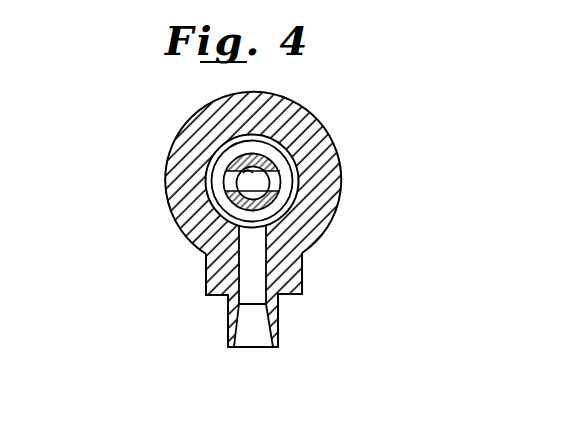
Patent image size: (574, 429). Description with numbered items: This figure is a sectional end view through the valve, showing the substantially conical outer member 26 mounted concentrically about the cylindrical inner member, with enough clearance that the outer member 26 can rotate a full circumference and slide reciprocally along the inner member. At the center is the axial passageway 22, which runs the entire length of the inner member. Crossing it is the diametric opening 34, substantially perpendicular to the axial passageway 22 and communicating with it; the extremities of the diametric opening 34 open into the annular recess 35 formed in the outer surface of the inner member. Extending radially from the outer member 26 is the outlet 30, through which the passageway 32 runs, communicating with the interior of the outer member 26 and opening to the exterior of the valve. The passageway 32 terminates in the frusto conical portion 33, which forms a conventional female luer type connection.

The axial passageway 22 is at (248, 168).
The outer member 26 is at (312, 113).
The outlet 30 is at (207, 280).
The passageway 32 is at (262, 282).
The frusto conical portion 33 is at (247, 337).
The diametric opening 34 is at (285, 174).
The annular recess 35 is at (218, 168).